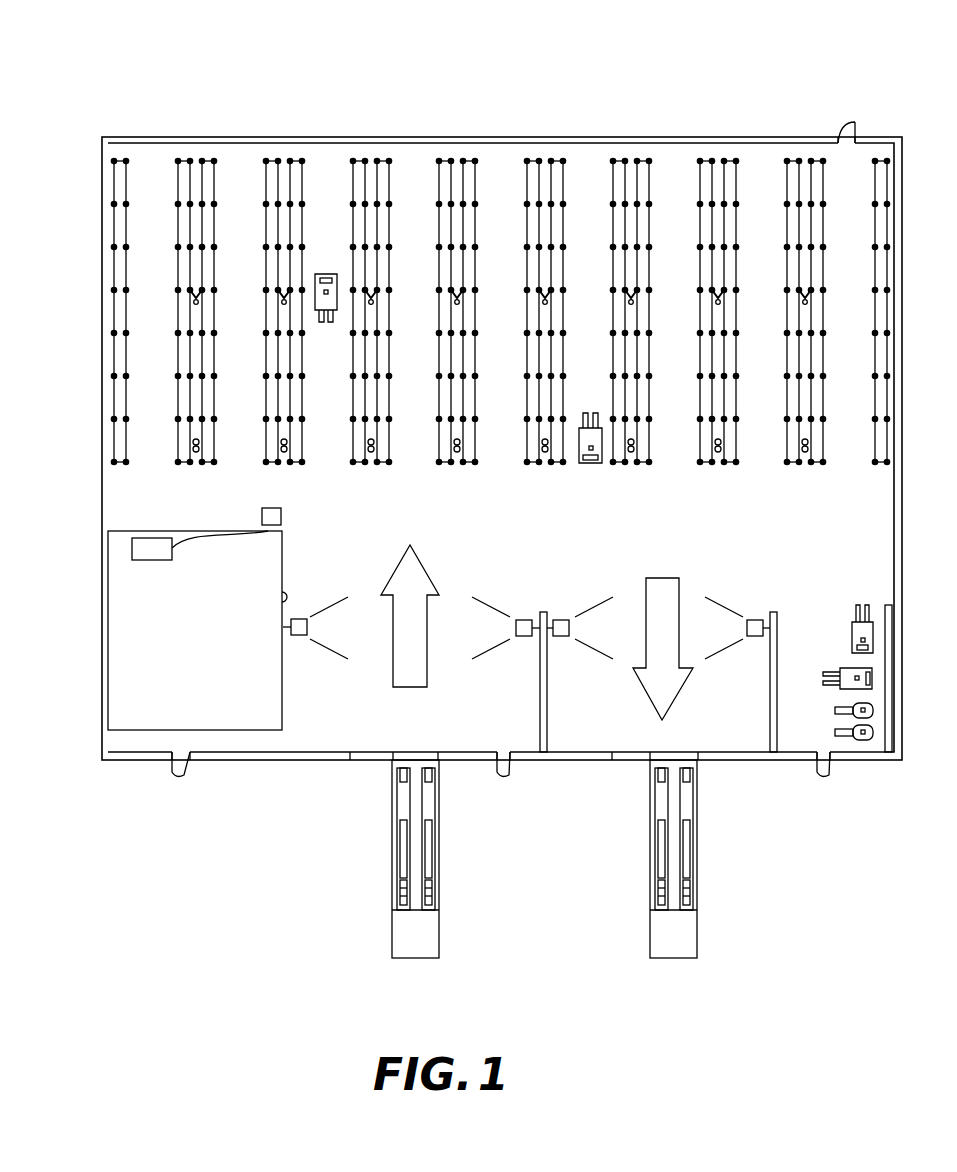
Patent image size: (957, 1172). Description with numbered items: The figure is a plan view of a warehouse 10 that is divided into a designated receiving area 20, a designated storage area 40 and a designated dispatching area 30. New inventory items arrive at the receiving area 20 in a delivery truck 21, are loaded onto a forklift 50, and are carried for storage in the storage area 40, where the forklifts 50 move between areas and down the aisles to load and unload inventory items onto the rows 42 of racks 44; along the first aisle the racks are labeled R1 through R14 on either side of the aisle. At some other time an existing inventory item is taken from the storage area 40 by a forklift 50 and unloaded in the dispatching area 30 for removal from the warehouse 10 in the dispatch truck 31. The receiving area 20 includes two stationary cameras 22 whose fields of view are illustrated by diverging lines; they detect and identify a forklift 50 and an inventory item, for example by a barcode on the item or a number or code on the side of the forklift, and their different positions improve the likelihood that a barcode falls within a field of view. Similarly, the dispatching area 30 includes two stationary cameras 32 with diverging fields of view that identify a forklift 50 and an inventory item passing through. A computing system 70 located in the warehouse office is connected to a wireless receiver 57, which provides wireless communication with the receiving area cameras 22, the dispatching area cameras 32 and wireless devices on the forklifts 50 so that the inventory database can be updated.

The warehouse 10 is at (317, 78).
The receiving area 20 is at (342, 722).
The delivery truck 21 is at (392, 868).
The stationary camera 22 is at (302, 618).
The dispatching area 30 is at (745, 722).
The dispatch truck 31 is at (698, 868).
The stationary camera 32 is at (560, 619).
The storage area 40 is at (593, 168).
The row of racks 42 is at (116, 150).
The rack 44 is at (118, 182).
The forklift 50 is at (323, 272).
The wireless receiver 57 is at (281, 515).
The computing system 70 is at (150, 560).